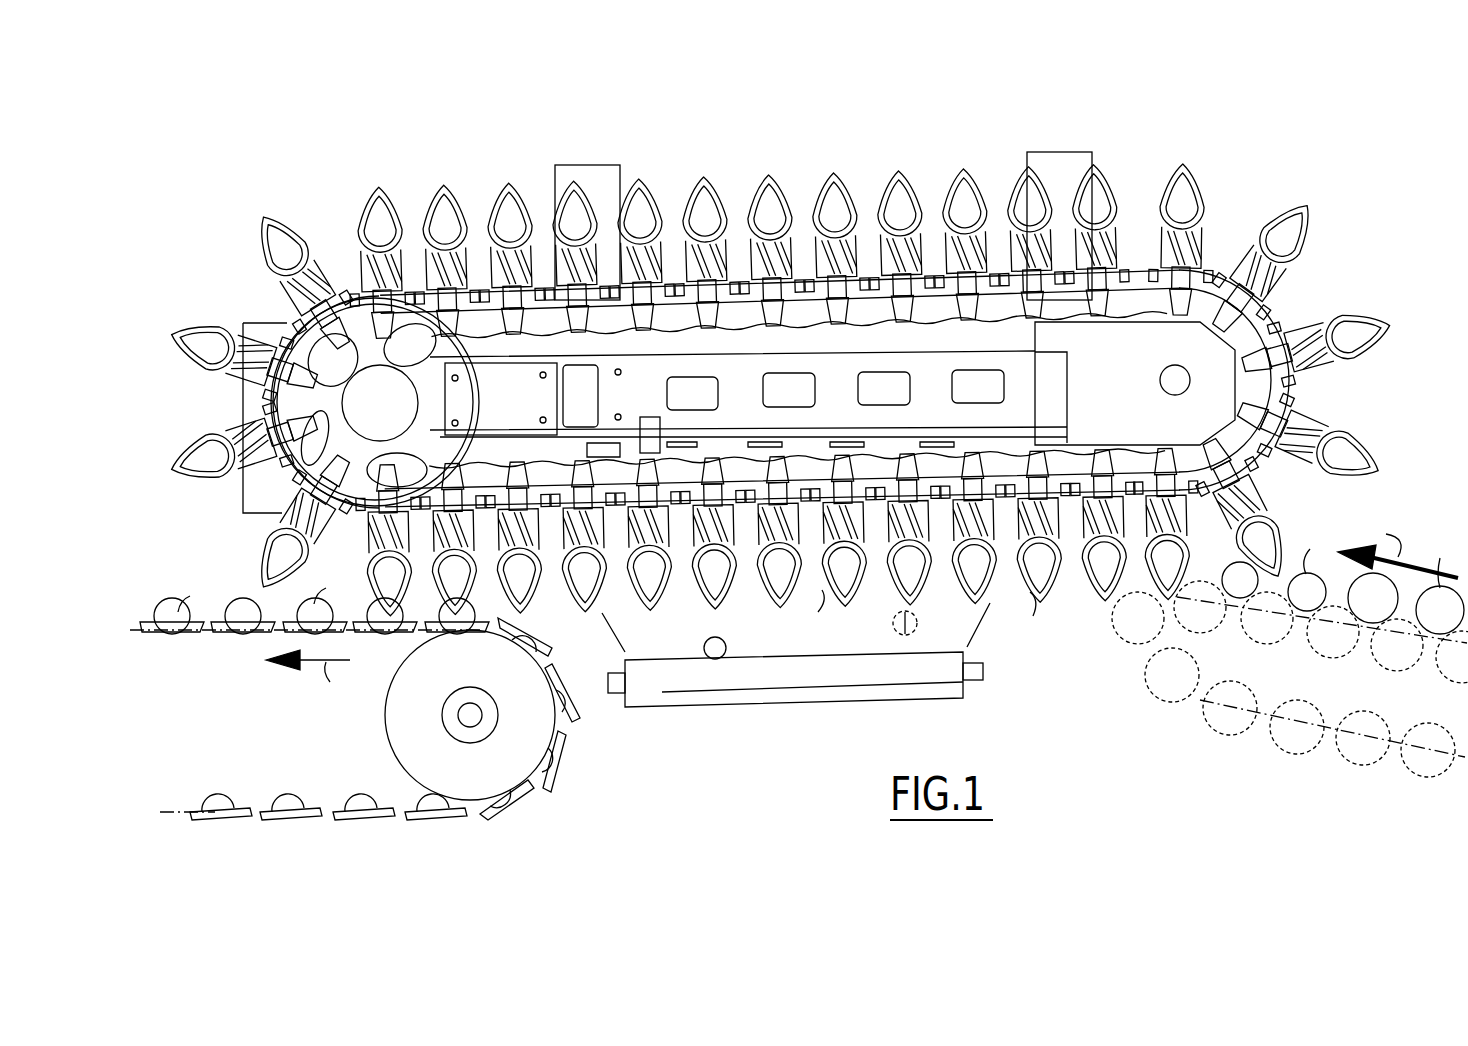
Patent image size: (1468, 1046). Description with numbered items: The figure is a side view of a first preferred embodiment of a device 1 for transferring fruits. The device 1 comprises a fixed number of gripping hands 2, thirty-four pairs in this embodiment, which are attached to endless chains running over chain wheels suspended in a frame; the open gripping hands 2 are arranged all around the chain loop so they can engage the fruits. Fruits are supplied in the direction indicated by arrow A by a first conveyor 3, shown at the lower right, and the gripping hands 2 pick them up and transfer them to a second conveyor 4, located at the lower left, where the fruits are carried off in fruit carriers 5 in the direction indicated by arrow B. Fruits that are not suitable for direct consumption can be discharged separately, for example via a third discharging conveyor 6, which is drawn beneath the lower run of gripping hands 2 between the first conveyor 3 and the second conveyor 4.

The device 1 is at (768, 140).
The gripping hands 2 is at (907, 182).
The first conveyor 3 is at (1332, 748).
The second conveyor 4 is at (532, 806).
The fruit carriers 5 is at (218, 640).
The third discharging conveyor 6 is at (822, 708).